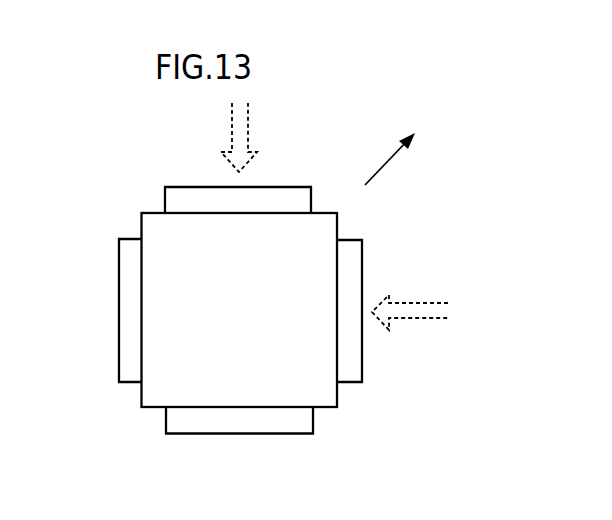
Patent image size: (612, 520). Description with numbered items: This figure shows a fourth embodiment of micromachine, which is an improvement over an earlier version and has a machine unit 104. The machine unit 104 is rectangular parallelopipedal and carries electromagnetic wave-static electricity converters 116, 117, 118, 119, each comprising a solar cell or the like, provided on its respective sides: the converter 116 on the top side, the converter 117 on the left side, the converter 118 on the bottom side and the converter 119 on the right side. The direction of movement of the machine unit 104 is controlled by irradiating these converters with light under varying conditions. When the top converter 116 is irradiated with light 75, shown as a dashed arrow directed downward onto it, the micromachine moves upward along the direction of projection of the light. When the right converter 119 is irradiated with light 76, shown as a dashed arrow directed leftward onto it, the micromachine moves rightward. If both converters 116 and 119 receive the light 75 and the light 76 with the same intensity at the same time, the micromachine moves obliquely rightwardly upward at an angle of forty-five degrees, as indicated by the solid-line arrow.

The machine unit 104 is at (349, 406).
The electromagnetic wave-static electricity converter 116 is at (183, 201).
The electromagnetic wave-static electricity converter 117 is at (131, 330).
The electromagnetic wave-static electricity converter 118 is at (203, 426).
The electromagnetic wave-static electricity converter 119 is at (350, 262).
The light 75 is at (248, 127).
The light 76 is at (428, 300).